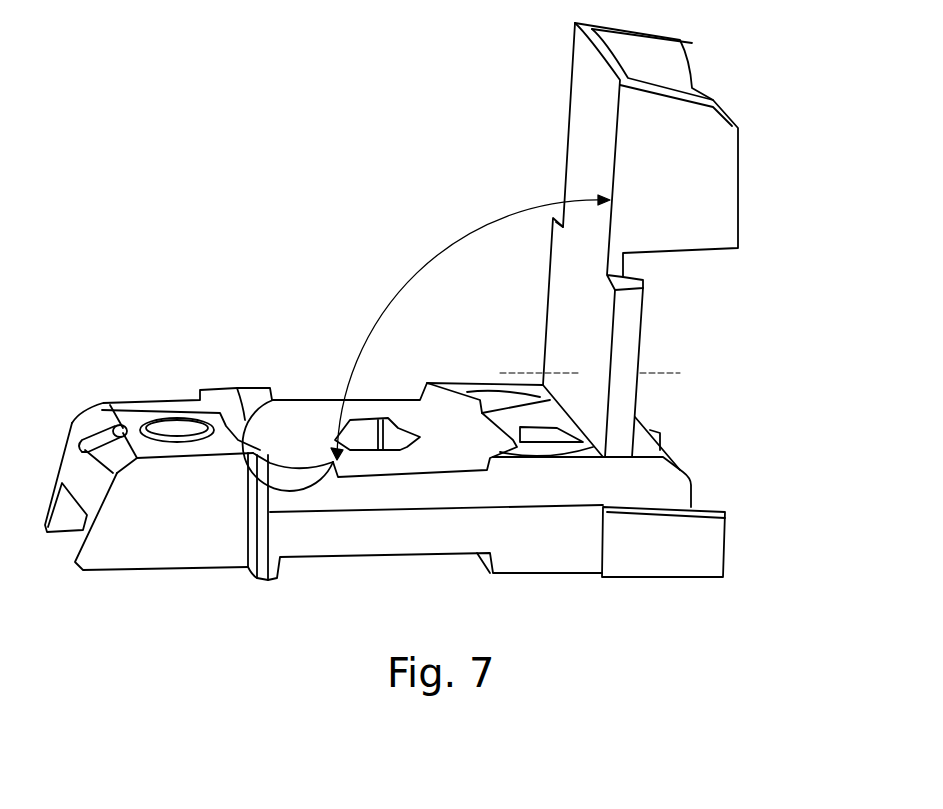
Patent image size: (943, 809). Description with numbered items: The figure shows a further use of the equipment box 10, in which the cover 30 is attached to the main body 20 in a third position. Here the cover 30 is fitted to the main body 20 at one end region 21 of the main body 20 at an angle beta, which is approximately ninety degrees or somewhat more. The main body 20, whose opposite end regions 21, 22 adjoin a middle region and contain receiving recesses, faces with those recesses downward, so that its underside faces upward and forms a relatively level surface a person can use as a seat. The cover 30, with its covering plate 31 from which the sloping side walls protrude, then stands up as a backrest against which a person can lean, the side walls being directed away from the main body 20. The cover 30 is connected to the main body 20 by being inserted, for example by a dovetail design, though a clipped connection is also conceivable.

The equipment box 10 is at (450, 323).
The main body 20 is at (185, 405).
The end region 21 is at (673, 480).
The end region 22 is at (153, 538).
The cover 30 is at (662, 240).
The covering plate 31 is at (585, 103).